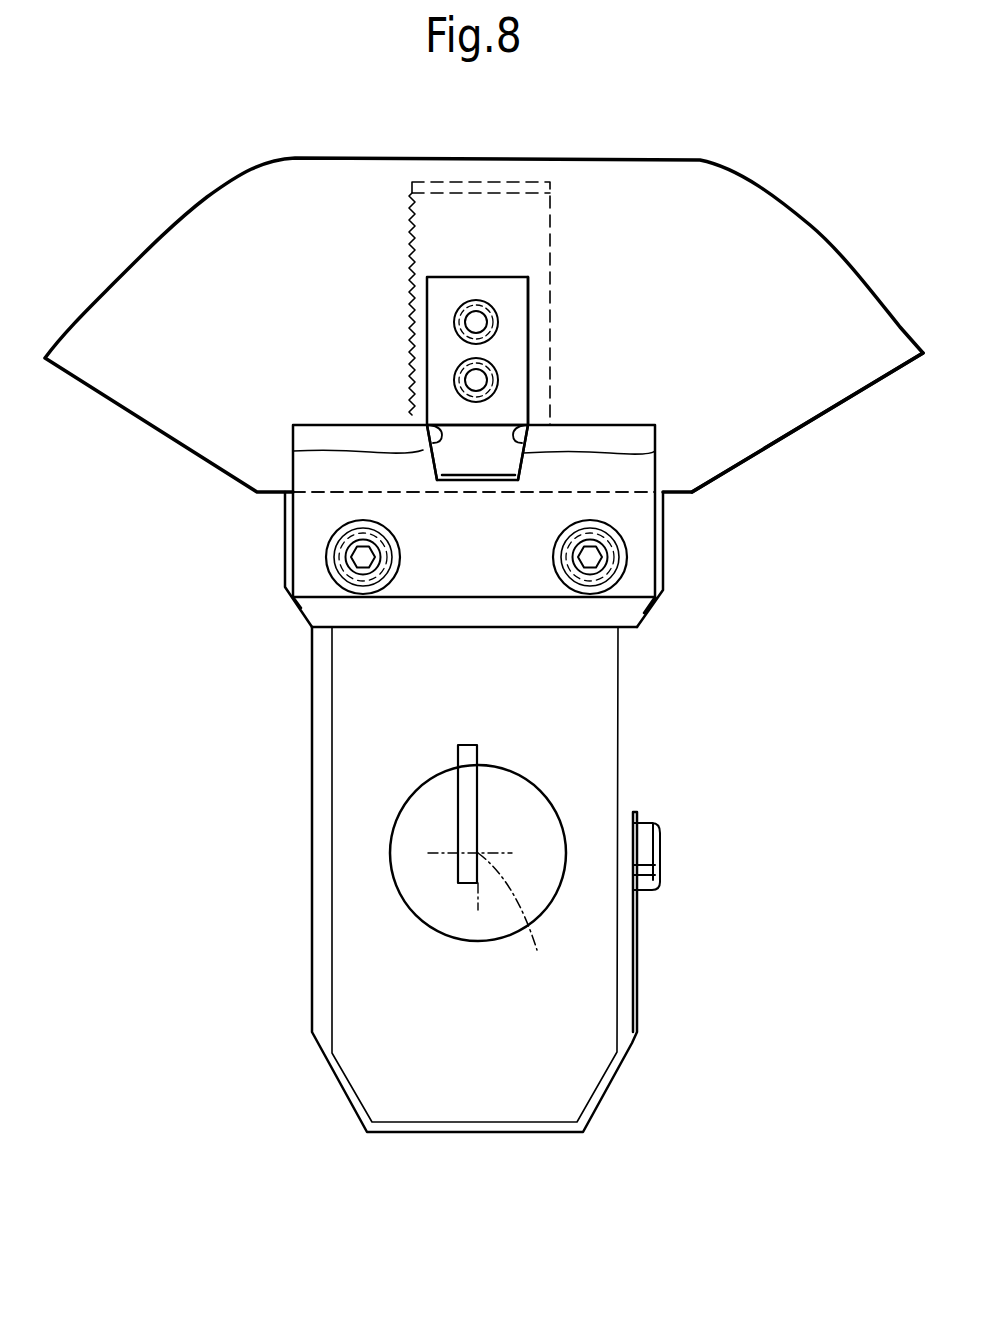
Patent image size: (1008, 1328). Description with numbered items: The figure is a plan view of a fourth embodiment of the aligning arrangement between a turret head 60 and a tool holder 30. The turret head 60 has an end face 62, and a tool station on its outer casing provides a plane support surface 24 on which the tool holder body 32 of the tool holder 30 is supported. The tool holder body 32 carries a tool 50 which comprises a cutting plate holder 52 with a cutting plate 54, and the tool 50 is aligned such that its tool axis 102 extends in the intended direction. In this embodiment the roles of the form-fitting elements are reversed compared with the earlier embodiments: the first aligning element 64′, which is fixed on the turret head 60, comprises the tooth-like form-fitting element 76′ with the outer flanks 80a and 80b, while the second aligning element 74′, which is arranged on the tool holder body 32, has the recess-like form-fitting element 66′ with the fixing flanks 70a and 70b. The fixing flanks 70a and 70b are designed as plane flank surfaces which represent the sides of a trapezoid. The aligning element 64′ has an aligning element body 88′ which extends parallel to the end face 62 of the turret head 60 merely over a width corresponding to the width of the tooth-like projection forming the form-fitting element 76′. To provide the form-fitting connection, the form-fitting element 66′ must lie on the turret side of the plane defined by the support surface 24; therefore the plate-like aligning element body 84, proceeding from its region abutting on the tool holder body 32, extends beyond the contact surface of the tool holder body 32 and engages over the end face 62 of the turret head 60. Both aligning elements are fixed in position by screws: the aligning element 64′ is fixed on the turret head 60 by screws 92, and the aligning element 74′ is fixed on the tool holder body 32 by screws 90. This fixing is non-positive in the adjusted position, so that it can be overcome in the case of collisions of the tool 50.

The turret head 60 is at (835, 216).
The end face 62 is at (828, 395).
The first aligning element 64′ is at (512, 284).
The aligning element body 88′ is at (512, 340).
The screws 92 is at (456, 334).
The second aligning element 74′ is at (630, 510).
The form-fitting element 66′ is at (484, 468).
The outer flank 80a is at (430, 425).
The outer flank 80b is at (520, 428).
The fixing flank 70a is at (415, 461).
The fixing flank 70b is at (532, 467).
The form-fitting element 76′ is at (467, 488).
The support surface 24 is at (330, 492).
The screws 90 is at (344, 557).
The aligning element body 84 is at (638, 582).
The tool holder body 32 is at (613, 613).
The tool holder 30 is at (598, 1010).
The tool 50 is at (526, 765).
The cutting plate holder 52 is at (422, 902).
The cutting plate 54 is at (466, 762).
The tool axis 102 is at (526, 919).